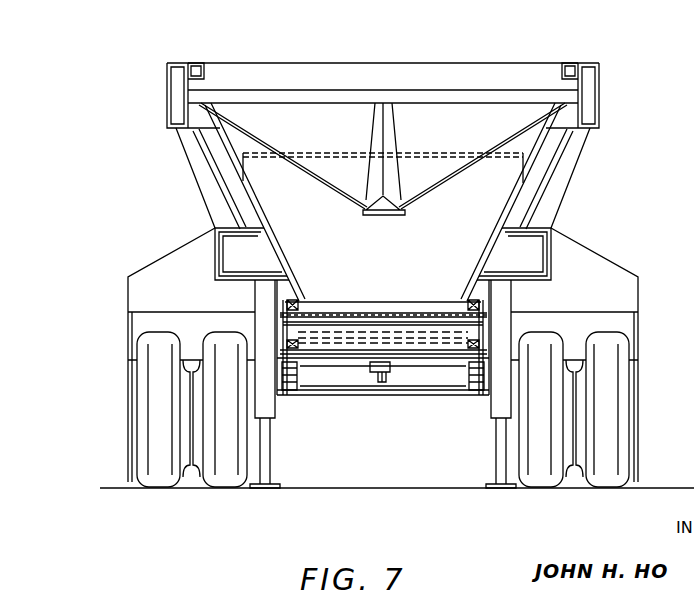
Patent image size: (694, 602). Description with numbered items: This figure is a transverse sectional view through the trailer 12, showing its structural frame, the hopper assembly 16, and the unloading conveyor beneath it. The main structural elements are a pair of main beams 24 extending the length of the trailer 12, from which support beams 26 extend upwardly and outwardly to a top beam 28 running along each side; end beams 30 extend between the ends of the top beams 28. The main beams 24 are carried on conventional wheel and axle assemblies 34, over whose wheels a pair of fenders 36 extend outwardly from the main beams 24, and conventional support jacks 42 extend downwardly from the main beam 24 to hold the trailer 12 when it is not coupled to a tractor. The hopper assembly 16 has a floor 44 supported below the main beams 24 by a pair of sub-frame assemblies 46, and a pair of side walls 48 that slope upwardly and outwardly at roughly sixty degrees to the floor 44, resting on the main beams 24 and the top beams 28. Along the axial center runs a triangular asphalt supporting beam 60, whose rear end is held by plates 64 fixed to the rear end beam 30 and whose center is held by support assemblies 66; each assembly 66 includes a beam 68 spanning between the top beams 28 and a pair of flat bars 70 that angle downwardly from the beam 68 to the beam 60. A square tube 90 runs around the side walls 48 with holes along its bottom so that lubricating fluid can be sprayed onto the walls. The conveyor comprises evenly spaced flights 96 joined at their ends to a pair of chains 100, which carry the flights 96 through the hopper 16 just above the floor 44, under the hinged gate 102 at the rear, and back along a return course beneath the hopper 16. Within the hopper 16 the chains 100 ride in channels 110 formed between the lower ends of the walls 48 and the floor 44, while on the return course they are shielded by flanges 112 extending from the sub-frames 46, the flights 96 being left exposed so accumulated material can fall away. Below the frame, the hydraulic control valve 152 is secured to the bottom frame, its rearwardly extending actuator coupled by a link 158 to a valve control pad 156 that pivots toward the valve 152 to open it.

The trailer 12 is at (112, 68).
The hopper assembly 16 is at (494, 203).
The main beams 24 is at (214, 229).
The support beams 26 is at (188, 160).
The top beam 28 is at (167, 98).
The end beams 30 is at (248, 62).
The wheel and axle assemblies 34 is at (280, 435).
The fenders 36 is at (642, 296).
The support jacks 42 is at (266, 470).
The floor 44 is at (366, 310).
The sub-frame assemblies 46 is at (256, 310).
The side walls 48 is at (278, 251).
The asphalt supporting beam 60 is at (385, 216).
The plates 64 is at (386, 127).
The support assemblies 66 is at (289, 172).
The beam 68 is at (328, 92).
The flat bars 70 is at (313, 181).
The square tube 90 is at (192, 62).
The flights 96 is at (398, 306).
The chains 100 is at (291, 300).
The gate 102 is at (457, 242).
The channels 110 is at (272, 273).
The flanges 112 is at (297, 357).
The control valve 152 is at (370, 382).
The valve control pad 156 is at (350, 376).
The link 158 is at (388, 378).